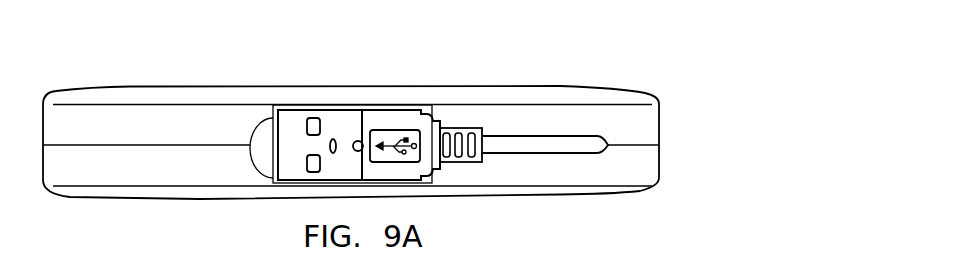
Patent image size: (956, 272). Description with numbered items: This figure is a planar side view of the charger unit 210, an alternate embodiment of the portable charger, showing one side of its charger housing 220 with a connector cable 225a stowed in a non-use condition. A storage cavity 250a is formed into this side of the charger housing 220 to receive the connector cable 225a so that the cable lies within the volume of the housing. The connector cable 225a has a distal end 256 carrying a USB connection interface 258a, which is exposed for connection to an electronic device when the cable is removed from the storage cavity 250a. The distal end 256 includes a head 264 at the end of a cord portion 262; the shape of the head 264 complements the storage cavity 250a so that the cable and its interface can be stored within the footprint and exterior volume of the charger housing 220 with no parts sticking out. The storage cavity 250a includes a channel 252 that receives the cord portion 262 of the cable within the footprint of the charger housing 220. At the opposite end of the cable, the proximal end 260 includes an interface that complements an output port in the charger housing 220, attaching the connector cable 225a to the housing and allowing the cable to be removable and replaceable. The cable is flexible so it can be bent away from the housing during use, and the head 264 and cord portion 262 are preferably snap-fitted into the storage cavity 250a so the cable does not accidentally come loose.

The charger unit 210 is at (573, 73).
The charger housing 220 is at (90, 173).
The connector cable 225a is at (413, 88).
The storage cavity 250a is at (344, 86).
The channel 252 is at (525, 168).
The distal end 256 is at (282, 95).
The USB connection interface 258a is at (283, 170).
The proximal end 260 is at (588, 165).
The cord portion 262 is at (527, 143).
The head 264 is at (423, 178).